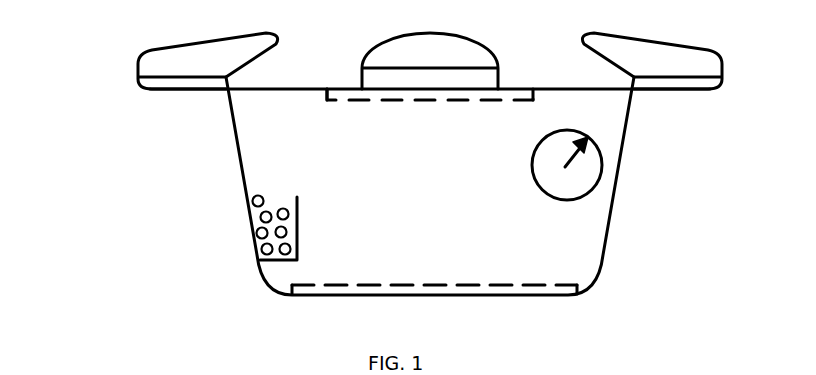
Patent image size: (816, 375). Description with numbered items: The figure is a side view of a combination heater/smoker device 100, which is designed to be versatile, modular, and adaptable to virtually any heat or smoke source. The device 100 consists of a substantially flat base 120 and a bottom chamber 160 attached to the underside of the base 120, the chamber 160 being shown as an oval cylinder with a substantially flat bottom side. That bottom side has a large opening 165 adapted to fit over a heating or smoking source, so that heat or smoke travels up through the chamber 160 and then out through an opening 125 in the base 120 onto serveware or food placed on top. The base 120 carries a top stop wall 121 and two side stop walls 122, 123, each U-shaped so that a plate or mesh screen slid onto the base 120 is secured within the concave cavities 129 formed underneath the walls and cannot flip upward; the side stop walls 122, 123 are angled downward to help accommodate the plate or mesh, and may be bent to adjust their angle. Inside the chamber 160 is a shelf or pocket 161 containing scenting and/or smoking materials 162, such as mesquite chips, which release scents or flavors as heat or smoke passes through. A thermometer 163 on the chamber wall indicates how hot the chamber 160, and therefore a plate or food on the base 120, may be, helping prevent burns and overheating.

The combination heater/smoker device 100 is at (88, 184).
The base 120 is at (308, 92).
The top stop wall 121 is at (413, 38).
The side stop wall 122 is at (175, 47).
The side stop wall 123 is at (685, 55).
The opening 125 is at (369, 100).
The concave cavities 129 is at (250, 78).
The bottom chamber 160 is at (244, 155).
The pocket 161 is at (306, 217).
The scenting and/or smoking materials 162 is at (263, 201).
The thermometer 163 is at (550, 187).
The opening 165 is at (345, 298).